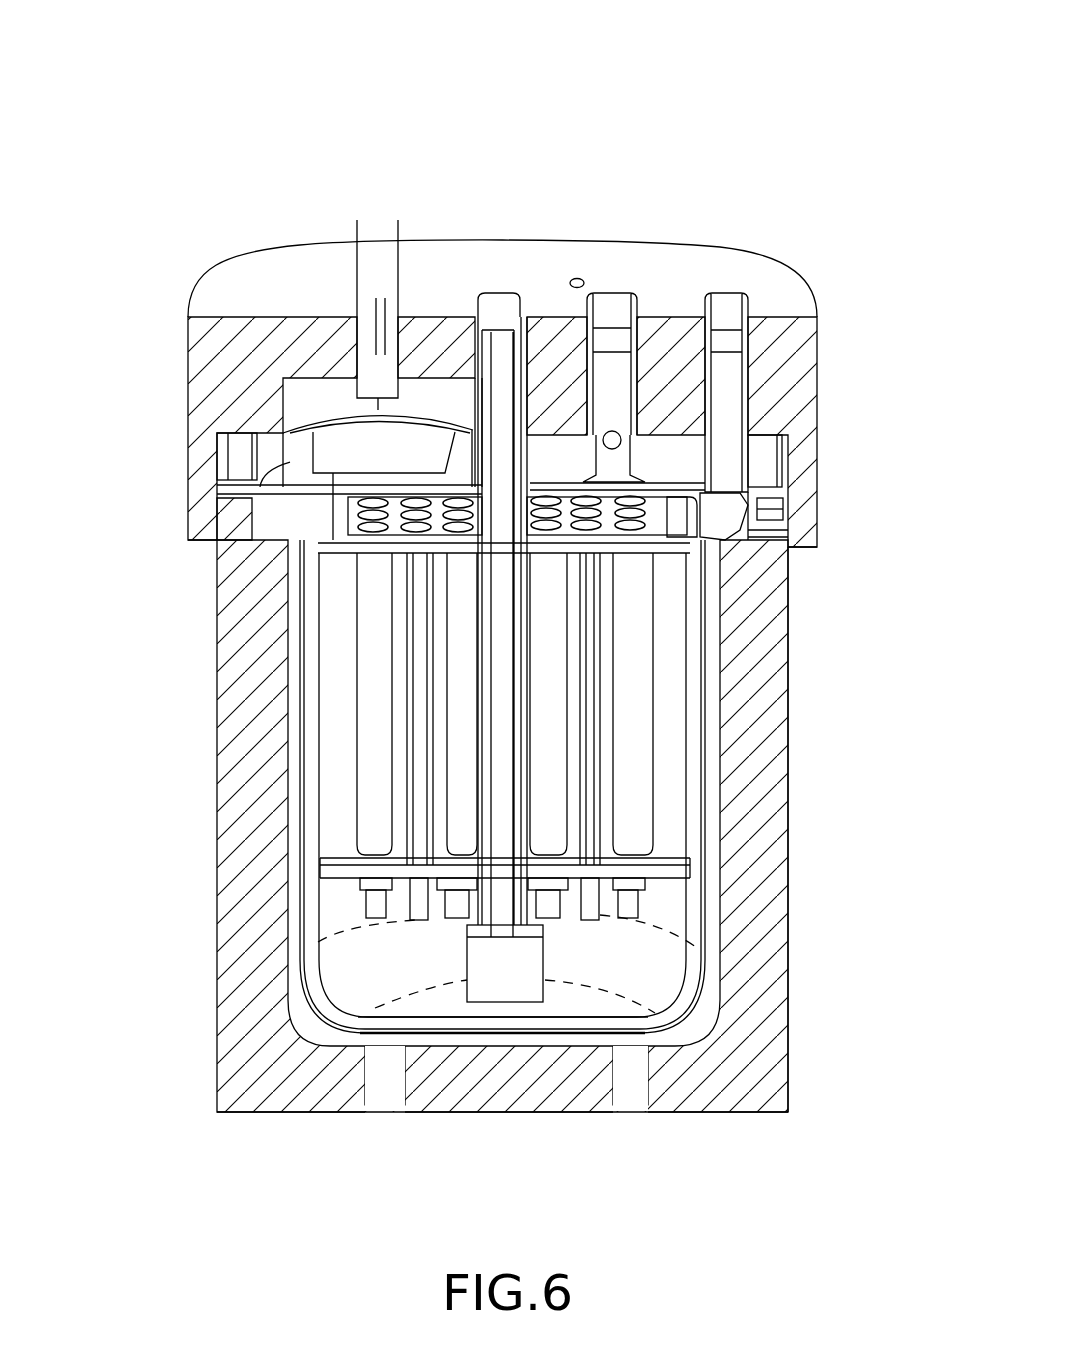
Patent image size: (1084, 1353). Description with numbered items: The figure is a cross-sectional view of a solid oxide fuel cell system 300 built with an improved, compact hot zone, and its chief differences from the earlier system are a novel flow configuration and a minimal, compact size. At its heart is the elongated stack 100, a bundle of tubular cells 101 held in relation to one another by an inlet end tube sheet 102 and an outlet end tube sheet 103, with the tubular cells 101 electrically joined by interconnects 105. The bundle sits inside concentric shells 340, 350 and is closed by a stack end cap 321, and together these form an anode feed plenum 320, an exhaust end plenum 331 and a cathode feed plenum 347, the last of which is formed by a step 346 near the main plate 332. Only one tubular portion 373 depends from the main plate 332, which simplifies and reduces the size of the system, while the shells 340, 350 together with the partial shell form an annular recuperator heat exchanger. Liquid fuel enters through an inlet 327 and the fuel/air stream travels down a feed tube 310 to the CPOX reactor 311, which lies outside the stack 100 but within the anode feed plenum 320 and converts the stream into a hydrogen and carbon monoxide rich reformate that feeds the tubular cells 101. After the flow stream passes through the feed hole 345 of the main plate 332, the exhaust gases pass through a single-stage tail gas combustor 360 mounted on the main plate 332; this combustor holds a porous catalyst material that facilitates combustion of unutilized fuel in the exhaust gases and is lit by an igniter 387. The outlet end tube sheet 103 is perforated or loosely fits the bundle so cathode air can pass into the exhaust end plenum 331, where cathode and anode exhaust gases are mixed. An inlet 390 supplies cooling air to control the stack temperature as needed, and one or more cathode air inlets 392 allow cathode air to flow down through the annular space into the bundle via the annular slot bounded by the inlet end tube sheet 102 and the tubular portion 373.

The SOFC system 300 is at (796, 124).
The feed tube 310 is at (580, 377).
The igniter 387 is at (380, 353).
The inlet 327 is at (499, 308).
The inlet 390 is at (612, 308).
The cathode air inlet 392 is at (735, 316).
The single-stage tail gas combustor 360 is at (372, 445).
The feed hole 345 is at (278, 528).
The main plate 332 is at (683, 510).
The exhaust end plenum 331 is at (703, 492).
The cathode feed plenum 347 is at (727, 500).
The step 346 is at (727, 520).
The outlet end tube sheet 103 is at (373, 543).
The shell 340 is at (710, 673).
The shell 350 is at (723, 702).
The anode feed plenum 320 is at (368, 970).
The tubular portion 373 is at (700, 638).
The stack end cap 321 is at (528, 1022).
The elongated stack 100 is at (460, 638).
The tubular cells 101 is at (377, 808).
The inlet end tube sheet 102 is at (377, 867).
The interconnects 105 is at (376, 910).
The CPOX reactor 311 is at (523, 985).